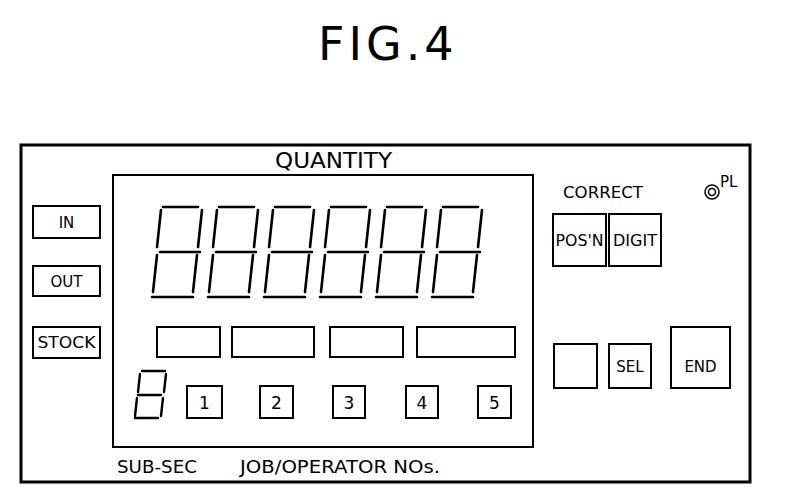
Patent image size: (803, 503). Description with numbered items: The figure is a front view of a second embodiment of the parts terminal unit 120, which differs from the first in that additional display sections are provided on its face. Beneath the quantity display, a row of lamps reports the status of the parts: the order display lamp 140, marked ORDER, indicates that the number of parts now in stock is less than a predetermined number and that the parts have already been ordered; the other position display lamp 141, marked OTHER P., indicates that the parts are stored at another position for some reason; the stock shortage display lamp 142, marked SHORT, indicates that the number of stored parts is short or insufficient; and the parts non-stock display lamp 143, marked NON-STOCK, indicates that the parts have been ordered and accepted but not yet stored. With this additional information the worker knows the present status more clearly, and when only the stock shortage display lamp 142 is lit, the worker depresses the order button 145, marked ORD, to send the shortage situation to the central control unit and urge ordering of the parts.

The parts terminal unit 120 is at (580, 141).
The order display lamp 140 is at (178, 357).
The other position display lamp 141 is at (263, 357).
The stock shortage display lamp 142 is at (355, 357).
The parts non-stock display lamp 143 is at (450, 357).
The order button 145 is at (565, 388).